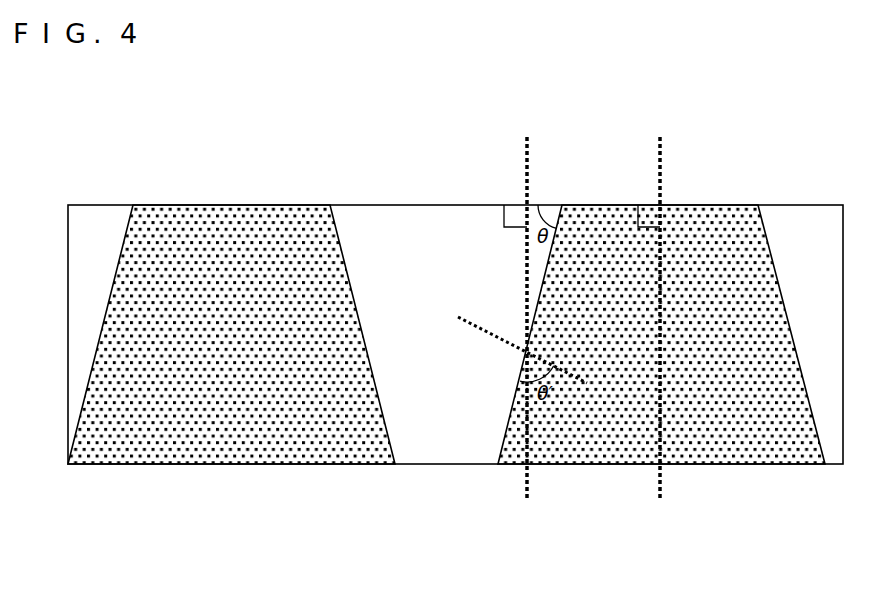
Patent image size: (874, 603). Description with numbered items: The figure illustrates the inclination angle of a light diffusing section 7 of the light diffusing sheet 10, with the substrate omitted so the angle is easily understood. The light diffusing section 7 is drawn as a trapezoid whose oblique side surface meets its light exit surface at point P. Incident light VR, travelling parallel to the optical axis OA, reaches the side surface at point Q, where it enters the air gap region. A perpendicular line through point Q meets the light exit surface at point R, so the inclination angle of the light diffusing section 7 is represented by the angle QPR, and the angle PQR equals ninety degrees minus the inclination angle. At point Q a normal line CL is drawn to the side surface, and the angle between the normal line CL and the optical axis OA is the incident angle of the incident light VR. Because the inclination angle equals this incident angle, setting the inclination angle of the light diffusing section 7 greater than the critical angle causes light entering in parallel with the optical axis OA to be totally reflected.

The light diffusing section 7 is at (765, 262).
The light diffusing sheet 10 is at (822, 503).
The incident light VR is at (528, 335).
The optical axis OA is at (656, 335).
The normal line CL is at (510, 343).
The point P is at (552, 204).
The point Q is at (527, 366).
The point R is at (515, 204).